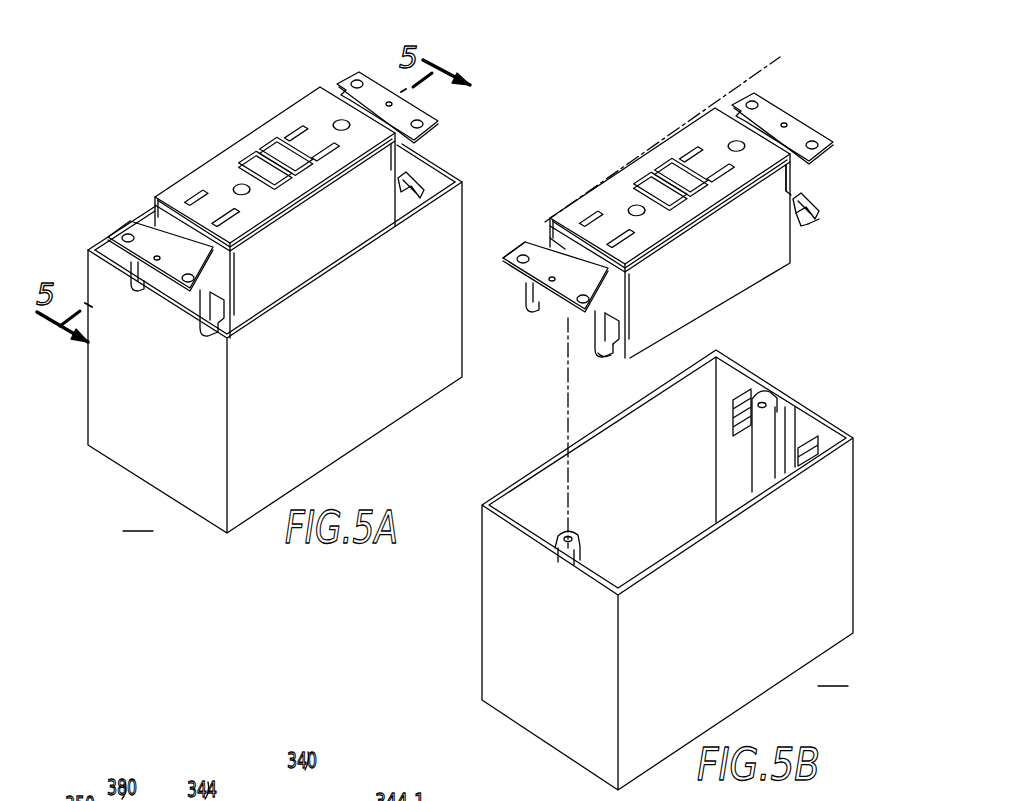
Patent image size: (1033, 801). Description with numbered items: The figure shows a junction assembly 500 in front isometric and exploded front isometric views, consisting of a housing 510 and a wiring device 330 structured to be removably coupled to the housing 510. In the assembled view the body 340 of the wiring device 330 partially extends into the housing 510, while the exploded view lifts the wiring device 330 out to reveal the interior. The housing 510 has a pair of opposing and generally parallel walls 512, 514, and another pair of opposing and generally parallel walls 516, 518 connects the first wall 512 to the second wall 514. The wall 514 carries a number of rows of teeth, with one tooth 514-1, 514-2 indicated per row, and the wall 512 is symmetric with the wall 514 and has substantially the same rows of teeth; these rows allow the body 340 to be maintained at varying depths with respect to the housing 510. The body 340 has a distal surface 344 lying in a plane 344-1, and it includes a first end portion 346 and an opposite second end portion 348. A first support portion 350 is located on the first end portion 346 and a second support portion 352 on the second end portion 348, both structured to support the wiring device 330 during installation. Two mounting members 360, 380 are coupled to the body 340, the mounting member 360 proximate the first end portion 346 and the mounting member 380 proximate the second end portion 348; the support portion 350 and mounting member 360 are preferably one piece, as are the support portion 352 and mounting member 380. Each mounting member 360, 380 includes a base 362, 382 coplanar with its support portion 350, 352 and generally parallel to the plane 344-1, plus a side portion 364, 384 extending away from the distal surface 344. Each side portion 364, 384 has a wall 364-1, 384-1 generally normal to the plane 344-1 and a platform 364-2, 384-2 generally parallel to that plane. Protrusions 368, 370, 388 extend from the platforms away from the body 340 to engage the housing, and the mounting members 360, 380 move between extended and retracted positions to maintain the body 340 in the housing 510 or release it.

In FIG. 5A, the wiring device 330 is at (290, 100).
In FIG. 5B, the wiring device 330 is at (666, 278).
In FIG. 5B, the body 340 is at (694, 99).
In FIG. 5B, the distal surface 344 is at (648, 148).
In FIG. 5B, the plane 344-1 is at (780, 62).
In FIG. 5B, the first end portion 346 is at (626, 261).
In FIG. 5B, the second end portion 348 is at (766, 156).
In FIG. 5B, the first support portion 350 is at (536, 301).
In FIG. 5B, the second support portion 352 is at (763, 108).
In FIG. 5B, the mounting member 360 is at (504, 260).
In FIG. 5B, the base 362 is at (565, 255).
In FIG. 5B, the side portion 364 is at (605, 346).
In FIG. 5B, the wall 364-1 is at (608, 300).
In FIG. 5B, the platform 364-2 is at (622, 320).
In FIG. 5B, the protrusion 368 is at (590, 364).
In FIG. 5B, the protrusion 370 is at (521, 316).
In FIG. 5B, the mounting member 380 is at (800, 101).
In FIG. 5B, the base 382 is at (840, 130).
In FIG. 5B, the side portion 384 is at (818, 232).
In FIG. 5B, the wall 384-1 is at (800, 157).
In FIG. 5B, the platform 384-2 is at (802, 228).
In FIG. 5B, the protrusion 388 is at (813, 228).
In FIG. 5A, the junction assembly 500 is at (262, 292).
In FIG. 5B, the junction assembly 500 is at (635, 399).
In FIG. 5A, the housing 510 is at (141, 442).
In FIG. 5B, the housing 510 is at (634, 558).
In FIG. 5B, the wall 512 is at (540, 705).
In FIG. 5B, the wall 514 is at (800, 412).
In FIG. 5B, the tooth 514-1 is at (817, 438).
In FIG. 5B, the tooth 514-2 is at (745, 388).
In FIG. 5B, the wall 516 is at (740, 677).
In FIG. 5B, the wall 518 is at (678, 400).